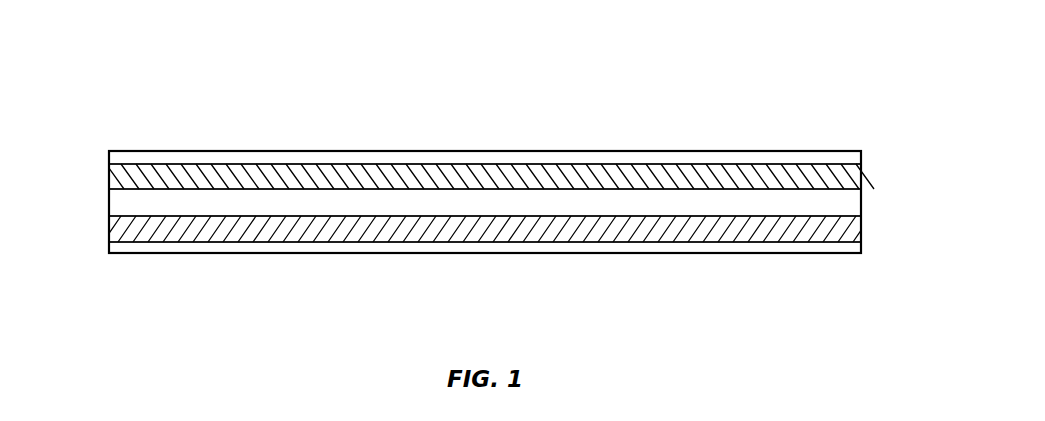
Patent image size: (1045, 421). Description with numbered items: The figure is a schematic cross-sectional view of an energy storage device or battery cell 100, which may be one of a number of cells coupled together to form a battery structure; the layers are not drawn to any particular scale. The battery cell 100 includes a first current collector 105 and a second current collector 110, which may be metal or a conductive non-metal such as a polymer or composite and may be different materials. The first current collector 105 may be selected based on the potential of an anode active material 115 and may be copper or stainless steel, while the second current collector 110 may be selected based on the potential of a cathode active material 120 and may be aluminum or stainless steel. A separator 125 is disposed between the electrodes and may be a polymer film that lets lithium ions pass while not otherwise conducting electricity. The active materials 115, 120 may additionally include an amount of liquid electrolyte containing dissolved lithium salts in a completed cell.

The battery cell 100 is at (240, 92).
The first current collector 105 is at (318, 253).
The second current collector 110 is at (712, 151).
The anode active material 115 is at (110, 223).
The cathode active material 120 is at (861, 172).
The separator 125 is at (861, 207).